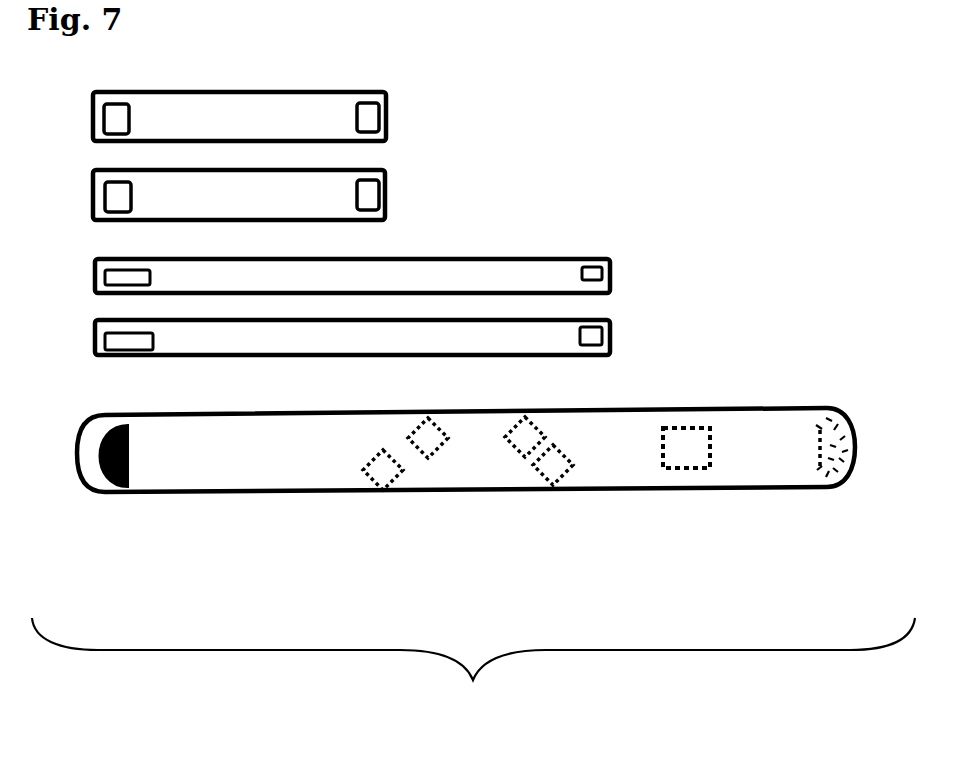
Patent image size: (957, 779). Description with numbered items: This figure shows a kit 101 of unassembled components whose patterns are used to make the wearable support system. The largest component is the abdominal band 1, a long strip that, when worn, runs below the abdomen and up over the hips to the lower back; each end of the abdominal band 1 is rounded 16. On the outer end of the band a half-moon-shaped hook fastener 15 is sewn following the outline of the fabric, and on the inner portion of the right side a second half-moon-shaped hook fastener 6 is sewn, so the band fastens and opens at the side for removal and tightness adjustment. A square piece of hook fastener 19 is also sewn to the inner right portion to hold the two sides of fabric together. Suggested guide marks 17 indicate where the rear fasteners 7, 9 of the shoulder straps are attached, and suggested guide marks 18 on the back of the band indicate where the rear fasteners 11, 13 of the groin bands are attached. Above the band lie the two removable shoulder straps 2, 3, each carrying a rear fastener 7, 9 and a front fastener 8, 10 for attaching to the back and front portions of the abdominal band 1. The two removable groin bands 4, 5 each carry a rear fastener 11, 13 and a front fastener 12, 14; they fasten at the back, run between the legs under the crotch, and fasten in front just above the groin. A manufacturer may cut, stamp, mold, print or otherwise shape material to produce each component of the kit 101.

The abdominal band 1 is at (468, 463).
The shoulder strap 2 is at (548, 273).
The shoulder strap 3 is at (242, 343).
The groin band 4 is at (270, 110).
The groin band 5 is at (208, 205).
The hook fastener 6 is at (820, 447).
The rear fastener of shoulder strap 7 is at (592, 273).
The front fastener of shoulder strap 8 is at (110, 278).
The rear fastener of shoulder strap 9 is at (592, 334).
The front fastener of shoulder strap 10 is at (110, 340).
The rear fastener of groin band 11 is at (368, 113).
The front fastener of groin band 12 is at (112, 118).
The rear fastener of groin band 13 is at (368, 195).
The front fastener of groin band 14 is at (115, 198).
The hook fastener 15 is at (117, 487).
The rounded end 16 is at (840, 412).
The suggested guide marks 17 is at (428, 438).
The suggested guide marks 18 is at (383, 470).
The square hook fastener 19 is at (682, 437).
The kit 101 is at (473, 664).